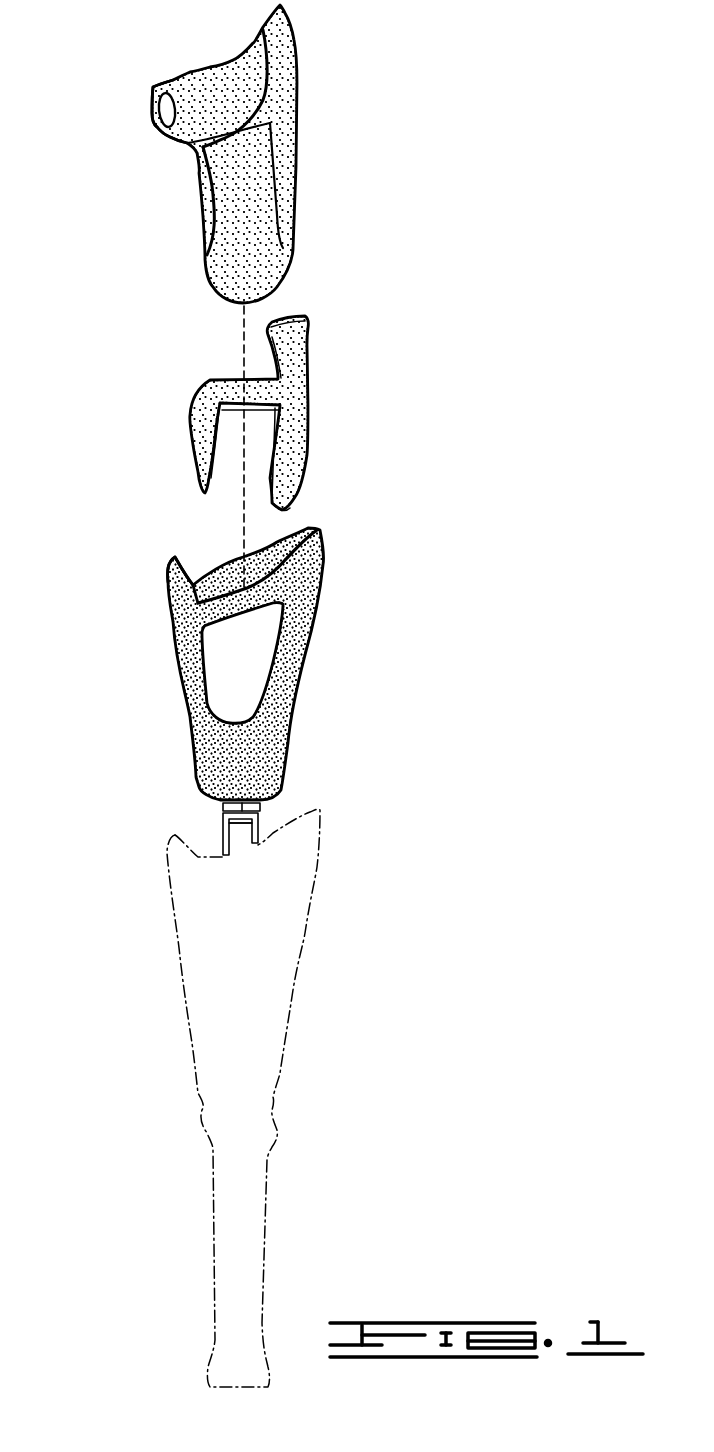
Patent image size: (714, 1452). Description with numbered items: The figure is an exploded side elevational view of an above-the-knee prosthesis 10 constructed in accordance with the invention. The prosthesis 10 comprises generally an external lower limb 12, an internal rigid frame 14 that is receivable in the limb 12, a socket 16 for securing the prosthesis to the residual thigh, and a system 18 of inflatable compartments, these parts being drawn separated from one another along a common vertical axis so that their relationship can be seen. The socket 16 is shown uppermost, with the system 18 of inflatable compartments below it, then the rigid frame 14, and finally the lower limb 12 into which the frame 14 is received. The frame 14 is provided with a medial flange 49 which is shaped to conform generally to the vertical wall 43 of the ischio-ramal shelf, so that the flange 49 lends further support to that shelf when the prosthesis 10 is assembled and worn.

The prosthesis 10 is at (118, 228).
The external lower limb 12 is at (170, 870).
The internal rigid frame 14 is at (168, 589).
The socket 16 is at (158, 130).
The system of inflatable compartments 18 is at (203, 382).
The vertical wall of the shelf 43 is at (157, 87).
The medial flange 49 is at (173, 557).